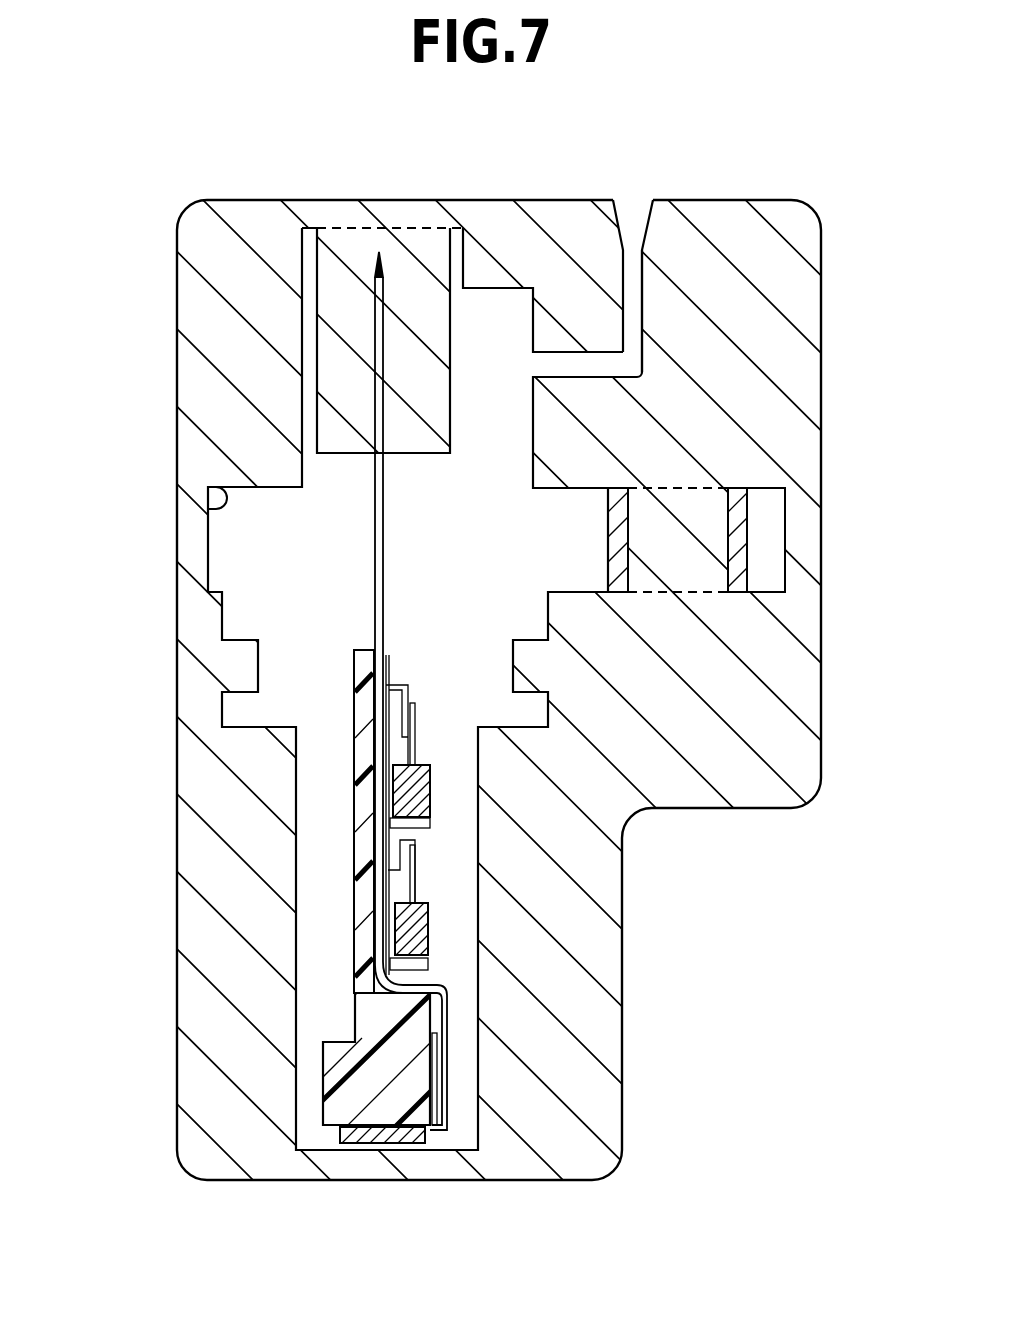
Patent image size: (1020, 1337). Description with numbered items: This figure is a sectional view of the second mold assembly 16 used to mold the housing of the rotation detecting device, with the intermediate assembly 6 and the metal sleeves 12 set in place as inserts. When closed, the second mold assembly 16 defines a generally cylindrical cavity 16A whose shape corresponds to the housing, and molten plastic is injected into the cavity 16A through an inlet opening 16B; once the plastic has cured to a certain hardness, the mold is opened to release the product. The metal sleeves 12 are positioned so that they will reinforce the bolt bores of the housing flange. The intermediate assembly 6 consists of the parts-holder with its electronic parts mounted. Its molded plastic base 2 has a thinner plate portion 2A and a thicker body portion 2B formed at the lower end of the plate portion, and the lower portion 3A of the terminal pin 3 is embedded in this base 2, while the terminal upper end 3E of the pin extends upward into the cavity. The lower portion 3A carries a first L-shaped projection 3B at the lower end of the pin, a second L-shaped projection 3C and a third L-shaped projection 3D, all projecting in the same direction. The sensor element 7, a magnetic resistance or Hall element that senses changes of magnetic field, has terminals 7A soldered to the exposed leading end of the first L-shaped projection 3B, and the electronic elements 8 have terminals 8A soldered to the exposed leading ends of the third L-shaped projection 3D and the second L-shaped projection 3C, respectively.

The second mold assembly 16 is at (713, 227).
The inlet opening 16B is at (636, 200).
The cavity 16A is at (208, 490).
The metal sleeve 12 is at (738, 520).
The terminal pin 3 is at (380, 553).
The terminal upper end 3E is at (378, 372).
The intermediate assembly 6 is at (353, 648).
The third L-shaped projection 3D is at (402, 707).
The lower portion 3A is at (372, 783).
The second L-shaped projection 3C is at (400, 852).
The electronic element 8 is at (430, 797).
The terminal 8A is at (415, 882).
The thinner plate portion 2A is at (363, 938).
The plastic base 2 is at (353, 997).
The thicker body portion 2B is at (333, 1105).
The first L-shaped projection 3B is at (447, 995).
The terminal 7A is at (450, 1082).
The sensor element 7 is at (373, 1143).